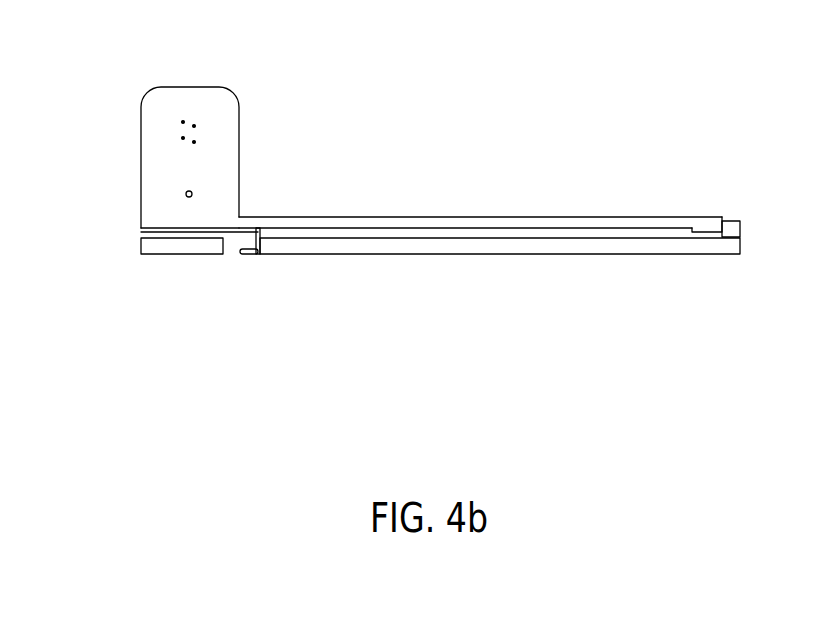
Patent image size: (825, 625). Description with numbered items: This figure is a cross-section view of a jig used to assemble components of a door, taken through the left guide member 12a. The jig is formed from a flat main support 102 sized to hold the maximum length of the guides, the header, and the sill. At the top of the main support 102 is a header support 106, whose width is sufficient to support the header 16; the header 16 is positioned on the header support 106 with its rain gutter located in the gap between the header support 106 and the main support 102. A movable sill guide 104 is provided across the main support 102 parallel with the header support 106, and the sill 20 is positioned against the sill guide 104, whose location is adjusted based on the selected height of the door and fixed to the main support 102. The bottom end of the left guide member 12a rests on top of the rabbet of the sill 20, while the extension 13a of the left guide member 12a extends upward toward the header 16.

The extension 13a is at (141, 160).
The left guide member 12a is at (505, 193).
The sill 20 is at (720, 216).
The header 16 is at (141, 230).
The header support 106 is at (182, 254).
The main support 102 is at (563, 262).
The sill guide 104 is at (742, 228).